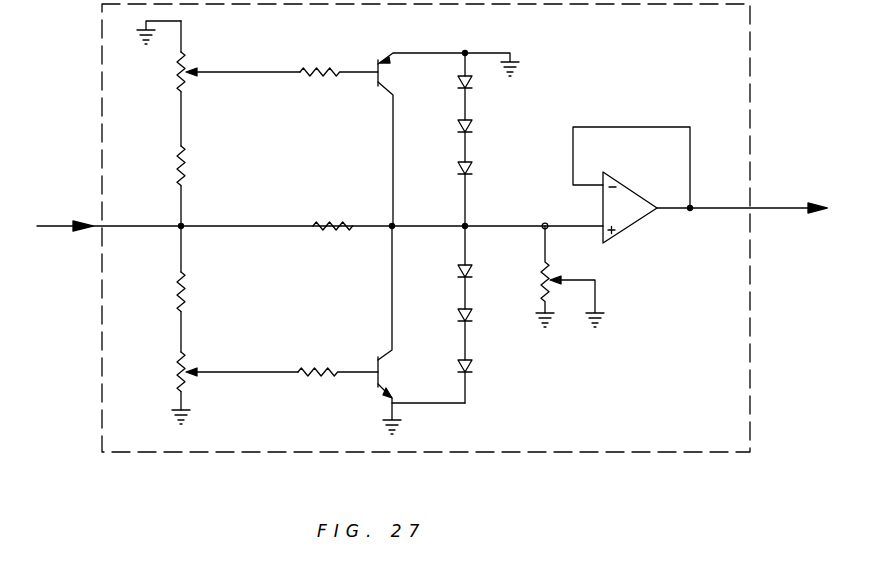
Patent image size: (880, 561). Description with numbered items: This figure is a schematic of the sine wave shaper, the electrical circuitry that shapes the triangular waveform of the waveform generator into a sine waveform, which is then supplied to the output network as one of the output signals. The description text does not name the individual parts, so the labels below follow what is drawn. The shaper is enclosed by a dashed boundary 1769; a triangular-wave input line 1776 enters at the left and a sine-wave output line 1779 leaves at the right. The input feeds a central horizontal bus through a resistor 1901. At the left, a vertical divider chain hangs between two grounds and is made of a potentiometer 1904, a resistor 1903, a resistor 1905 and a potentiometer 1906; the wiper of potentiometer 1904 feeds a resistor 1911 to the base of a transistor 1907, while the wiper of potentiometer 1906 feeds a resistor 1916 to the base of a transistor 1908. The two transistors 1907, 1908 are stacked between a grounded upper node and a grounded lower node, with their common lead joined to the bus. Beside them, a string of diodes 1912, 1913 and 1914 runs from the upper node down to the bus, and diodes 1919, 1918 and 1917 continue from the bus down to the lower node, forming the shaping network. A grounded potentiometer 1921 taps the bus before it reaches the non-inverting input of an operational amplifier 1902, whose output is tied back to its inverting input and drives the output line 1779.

The offset circuit enclosure 1769 is at (752, 88).
The input signal line 1776 is at (47, 222).
The output signal line 1779 is at (781, 211).
The resistor 1901 is at (332, 218).
The operational amplifier 1902 is at (633, 229).
The resistor 1903 is at (177, 169).
The potentiometer 1904 is at (179, 79).
The resistor 1905 is at (173, 290).
The potentiometer 1906 is at (173, 364).
The transistor 1907 is at (383, 90).
The transistor 1908 is at (373, 384).
The resistor 1911 is at (312, 62).
The diode 1912 is at (463, 78).
The diode 1913 is at (473, 124).
The diode 1914 is at (473, 167).
The resistor 1916 is at (318, 346).
The diode 1917 is at (473, 367).
The diode 1918 is at (473, 315).
The diode 1919 is at (470, 269).
The potentiometer 1921 is at (534, 282).